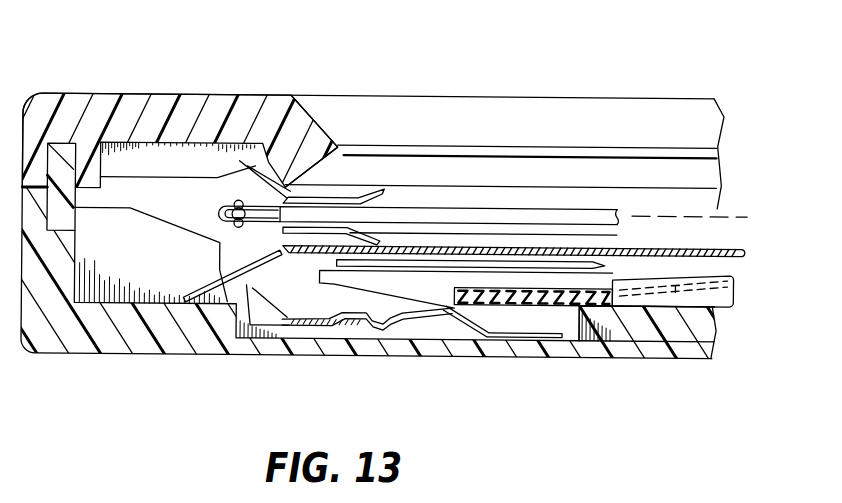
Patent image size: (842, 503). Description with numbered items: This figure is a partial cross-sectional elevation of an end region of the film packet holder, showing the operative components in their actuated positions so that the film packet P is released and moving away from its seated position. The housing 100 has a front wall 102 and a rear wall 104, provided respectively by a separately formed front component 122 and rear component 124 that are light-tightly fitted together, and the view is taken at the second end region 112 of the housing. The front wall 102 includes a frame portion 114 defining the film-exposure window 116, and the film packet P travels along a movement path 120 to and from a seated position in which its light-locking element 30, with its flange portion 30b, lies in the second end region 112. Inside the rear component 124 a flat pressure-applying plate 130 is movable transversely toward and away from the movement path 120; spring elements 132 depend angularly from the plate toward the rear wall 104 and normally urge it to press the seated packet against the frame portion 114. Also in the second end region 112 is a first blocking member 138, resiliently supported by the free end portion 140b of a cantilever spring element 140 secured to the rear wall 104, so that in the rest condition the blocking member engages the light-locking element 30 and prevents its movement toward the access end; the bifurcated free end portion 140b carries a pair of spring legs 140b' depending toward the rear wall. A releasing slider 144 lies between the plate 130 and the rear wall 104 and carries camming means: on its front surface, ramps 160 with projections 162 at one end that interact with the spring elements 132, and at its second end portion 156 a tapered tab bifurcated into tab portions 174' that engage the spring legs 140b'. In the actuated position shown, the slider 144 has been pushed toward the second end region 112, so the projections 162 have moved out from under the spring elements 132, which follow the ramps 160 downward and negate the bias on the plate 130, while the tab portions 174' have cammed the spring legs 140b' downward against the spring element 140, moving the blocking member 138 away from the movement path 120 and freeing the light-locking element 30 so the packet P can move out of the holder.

The housing 100 is at (159, 92).
The front wall 102 is at (240, 94).
The rear wall 104 is at (651, 357).
The second end region 112 is at (160, 357).
The frame portion 114 is at (614, 96).
The film-exposure window 116 is at (338, 148).
The movement path 120 is at (649, 212).
The front component 122 is at (723, 118).
The rear component 124 is at (720, 344).
The pressure-applying plate 130 is at (743, 248).
The spring elements 132 is at (613, 247).
The first blocking member 138 is at (220, 272).
The cantilever spring element 140 is at (640, 305).
The free end portion 140b is at (348, 343).
The spring legs 140b' is at (490, 354).
The slider 144 is at (734, 292).
The second end portion 156 is at (586, 322).
The ramps 160 is at (530, 246).
The projections 162 is at (468, 246).
The tapered tab portions 174' is at (367, 339).
The light-locking element 30 is at (241, 165).
The second flange portion 30b is at (316, 262).
The elongated element E is at (501, 207).
The film packet P is at (568, 205).